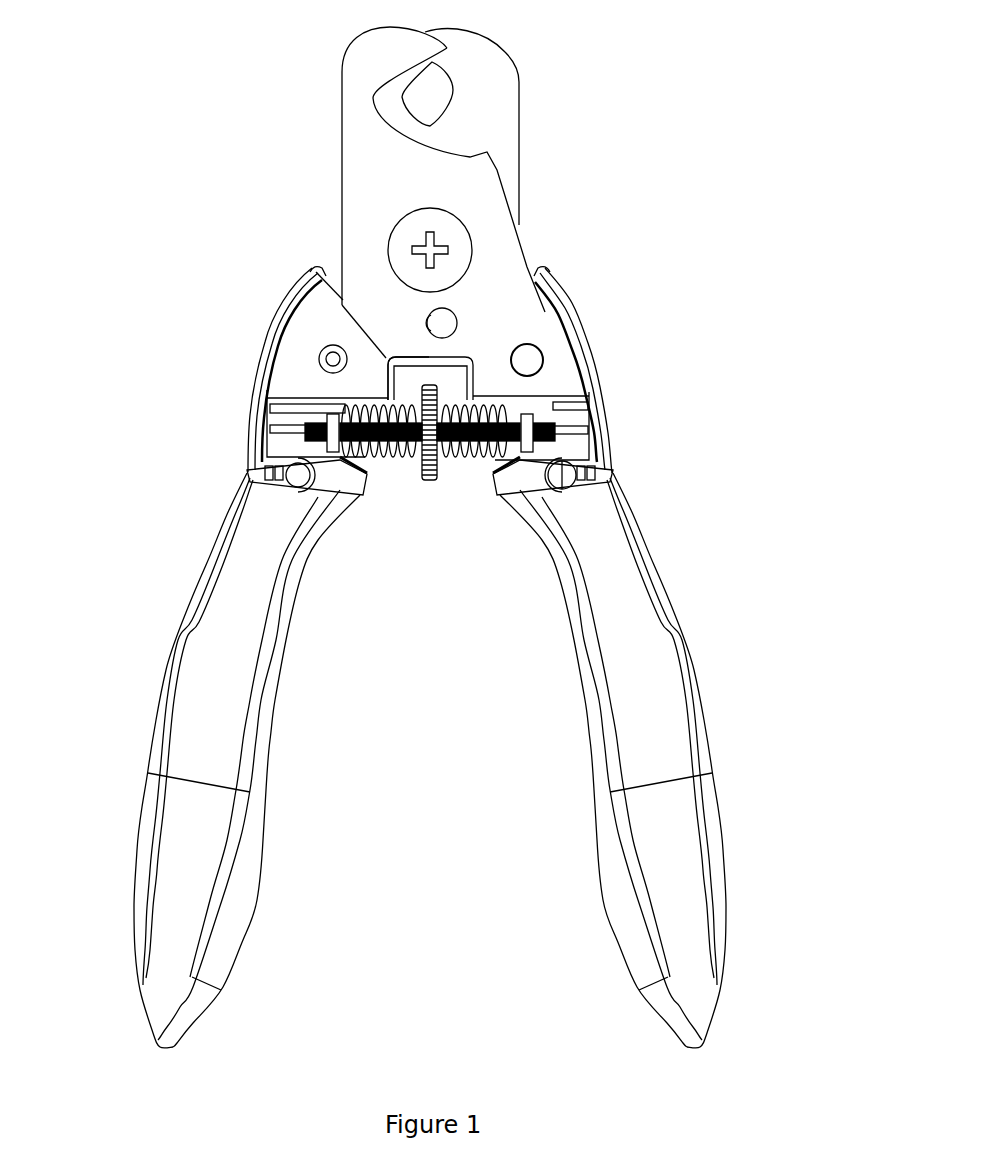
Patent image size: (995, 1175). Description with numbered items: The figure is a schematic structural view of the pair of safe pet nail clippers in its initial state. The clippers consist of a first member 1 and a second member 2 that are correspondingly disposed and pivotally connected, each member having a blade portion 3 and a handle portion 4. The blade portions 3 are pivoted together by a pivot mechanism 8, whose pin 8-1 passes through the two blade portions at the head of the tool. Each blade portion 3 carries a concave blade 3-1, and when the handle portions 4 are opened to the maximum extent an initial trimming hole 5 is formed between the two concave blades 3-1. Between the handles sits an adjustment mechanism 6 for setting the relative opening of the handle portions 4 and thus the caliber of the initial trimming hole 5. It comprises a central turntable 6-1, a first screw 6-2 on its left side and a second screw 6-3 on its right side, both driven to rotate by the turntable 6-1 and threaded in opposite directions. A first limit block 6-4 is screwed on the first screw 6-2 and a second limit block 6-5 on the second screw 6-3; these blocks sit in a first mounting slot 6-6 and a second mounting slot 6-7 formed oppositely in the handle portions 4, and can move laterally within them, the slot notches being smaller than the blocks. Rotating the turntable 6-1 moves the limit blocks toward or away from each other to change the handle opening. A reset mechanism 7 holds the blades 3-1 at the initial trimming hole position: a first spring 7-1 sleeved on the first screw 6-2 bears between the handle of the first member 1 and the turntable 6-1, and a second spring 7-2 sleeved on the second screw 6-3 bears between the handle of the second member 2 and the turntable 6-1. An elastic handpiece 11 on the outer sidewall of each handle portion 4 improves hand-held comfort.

The first member 1 is at (200, 741).
The second member 2 is at (655, 698).
The blade portion 3 is at (505, 135).
The blade 3-1 is at (416, 77).
The handle portion 4 is at (180, 860).
The initial trimming hole 5 is at (434, 98).
The adjustment mechanism 6 is at (432, 482).
The turntable 6-1 is at (430, 483).
The first screw 6-2 is at (305, 436).
The second screw 6-3 is at (552, 435).
The first limit block 6-4 is at (323, 415).
The second limit block 6-5 is at (532, 416).
The first mounting slot 6-6 is at (318, 452).
The second mounting slot 6-7 is at (565, 419).
The reset mechanism 7 is at (388, 411).
The first spring 7-1 is at (388, 411).
The second spring 7-2 is at (473, 410).
The pivot mechanism 8 is at (465, 230).
The pin 8-1 is at (465, 230).
The elastic handpiece 11 is at (150, 803).